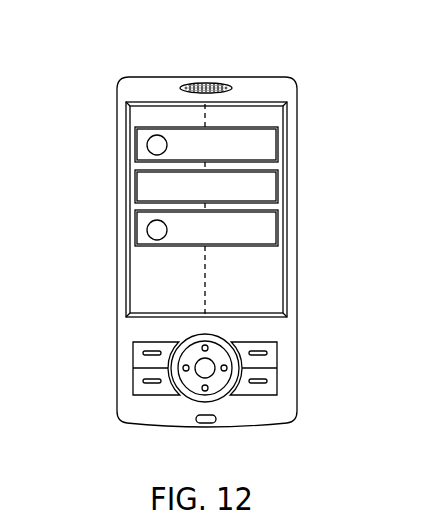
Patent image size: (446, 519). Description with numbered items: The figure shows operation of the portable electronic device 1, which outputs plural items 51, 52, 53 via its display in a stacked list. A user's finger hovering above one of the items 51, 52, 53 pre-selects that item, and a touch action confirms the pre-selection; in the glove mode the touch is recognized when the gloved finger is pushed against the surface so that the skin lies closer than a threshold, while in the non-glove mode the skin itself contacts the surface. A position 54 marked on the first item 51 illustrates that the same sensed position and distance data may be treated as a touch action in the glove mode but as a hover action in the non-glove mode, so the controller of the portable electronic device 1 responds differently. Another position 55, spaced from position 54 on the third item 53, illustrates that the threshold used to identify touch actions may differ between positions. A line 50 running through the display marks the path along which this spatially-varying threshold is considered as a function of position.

The portable electronic device 1 is at (121, 69).
The line 50 is at (205, 299).
The item 51 is at (277, 145).
The item 52 is at (277, 195).
The item 53 is at (277, 237).
The position 54 is at (147, 143).
The position 55 is at (147, 228).